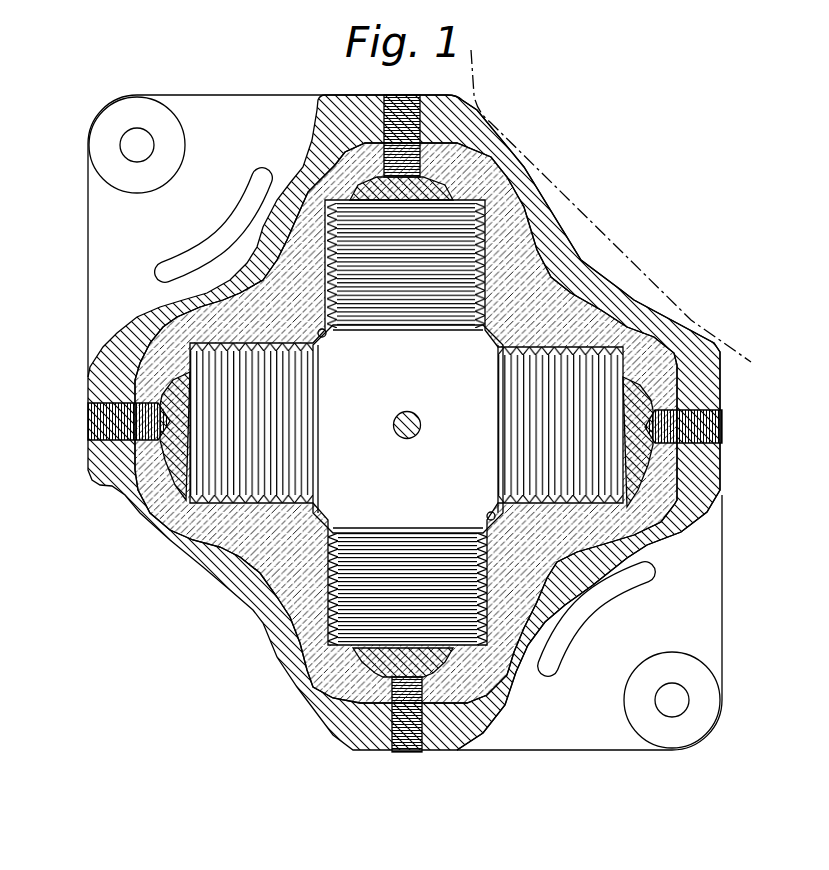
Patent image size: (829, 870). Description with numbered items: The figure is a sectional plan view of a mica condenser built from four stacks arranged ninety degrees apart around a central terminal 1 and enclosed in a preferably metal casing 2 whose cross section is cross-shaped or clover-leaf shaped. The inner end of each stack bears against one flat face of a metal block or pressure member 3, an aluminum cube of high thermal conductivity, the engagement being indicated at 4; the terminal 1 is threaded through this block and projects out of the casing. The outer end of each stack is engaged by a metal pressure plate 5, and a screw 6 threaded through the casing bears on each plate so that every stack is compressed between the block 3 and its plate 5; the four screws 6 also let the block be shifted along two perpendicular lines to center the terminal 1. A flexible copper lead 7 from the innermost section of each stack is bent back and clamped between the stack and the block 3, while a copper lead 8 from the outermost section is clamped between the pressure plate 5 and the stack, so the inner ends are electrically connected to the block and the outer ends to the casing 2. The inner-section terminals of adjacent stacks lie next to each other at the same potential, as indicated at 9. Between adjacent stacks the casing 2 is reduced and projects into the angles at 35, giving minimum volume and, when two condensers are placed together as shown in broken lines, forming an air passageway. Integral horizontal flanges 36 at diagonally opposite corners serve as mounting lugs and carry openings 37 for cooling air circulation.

The central terminal 1 is at (609, 216).
The casing 2 is at (661, 307).
The metal block or pressure member 3 is at (408, 429).
The engaging surfaces of block 4 is at (445, 325).
The metal pressure plate 5 is at (160, 388).
The screw 6 is at (417, 97).
The flexible copper lead 7 is at (477, 510).
The copper lead 8 is at (300, 168).
The adjacent inner-section terminals 9 is at (324, 337).
The reduced portions of casing 35 is at (236, 253).
The horizontal flanges 36 is at (90, 207).
The openings 37 is at (241, 197).